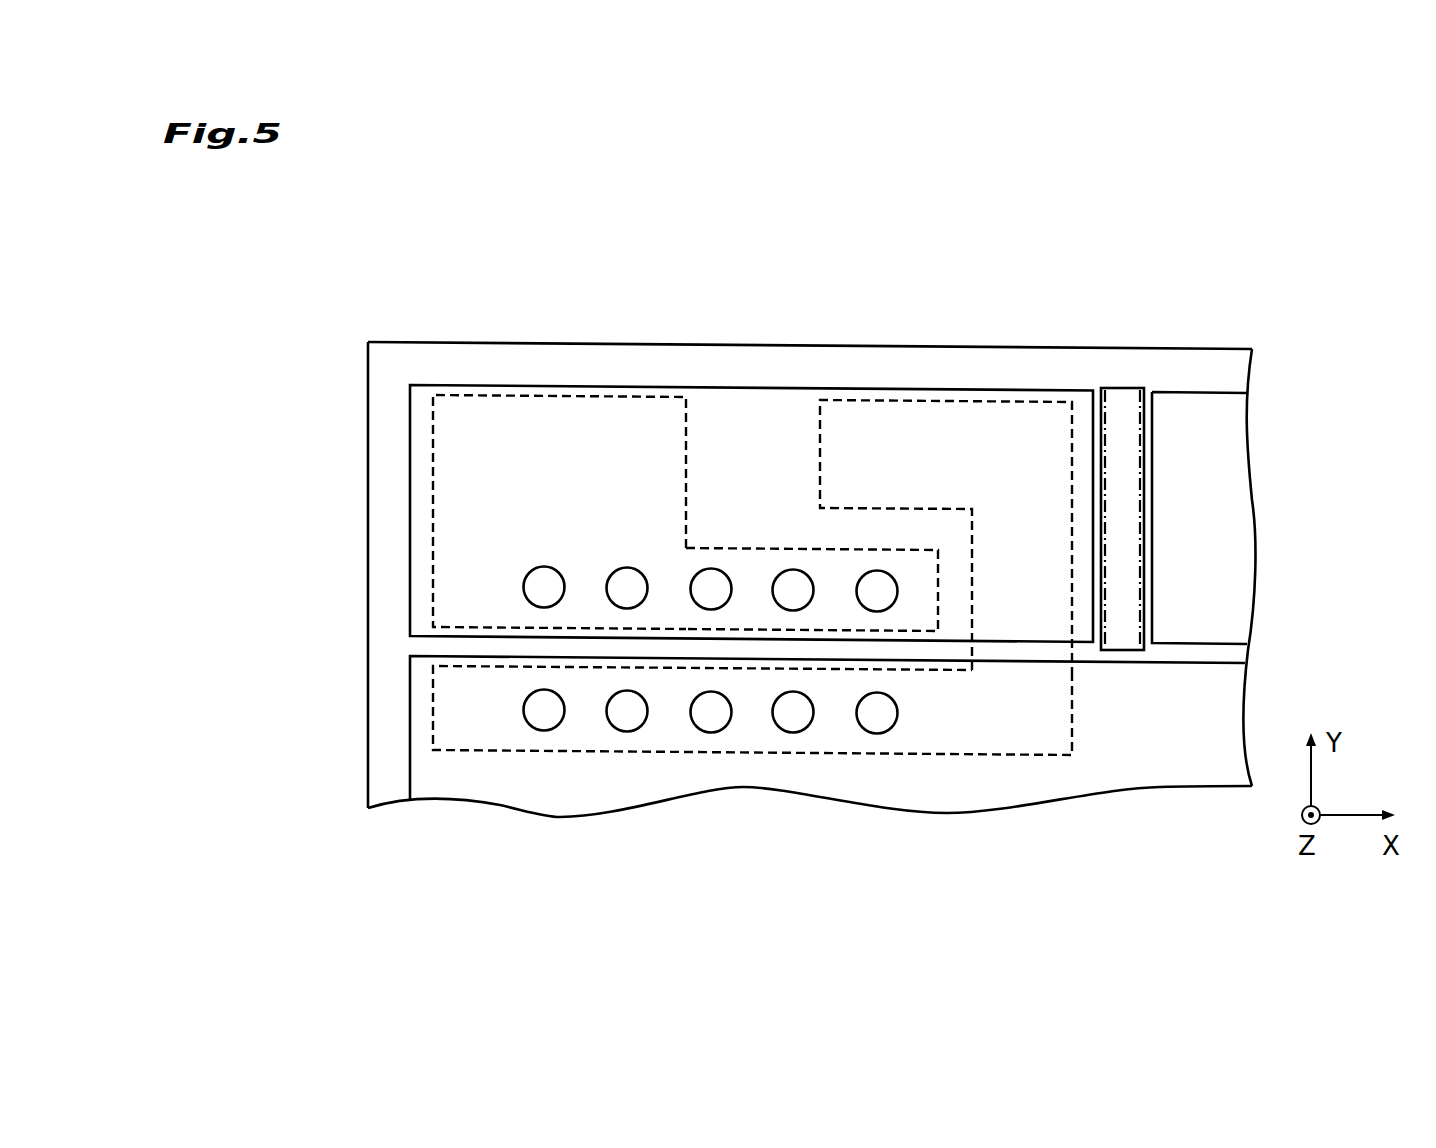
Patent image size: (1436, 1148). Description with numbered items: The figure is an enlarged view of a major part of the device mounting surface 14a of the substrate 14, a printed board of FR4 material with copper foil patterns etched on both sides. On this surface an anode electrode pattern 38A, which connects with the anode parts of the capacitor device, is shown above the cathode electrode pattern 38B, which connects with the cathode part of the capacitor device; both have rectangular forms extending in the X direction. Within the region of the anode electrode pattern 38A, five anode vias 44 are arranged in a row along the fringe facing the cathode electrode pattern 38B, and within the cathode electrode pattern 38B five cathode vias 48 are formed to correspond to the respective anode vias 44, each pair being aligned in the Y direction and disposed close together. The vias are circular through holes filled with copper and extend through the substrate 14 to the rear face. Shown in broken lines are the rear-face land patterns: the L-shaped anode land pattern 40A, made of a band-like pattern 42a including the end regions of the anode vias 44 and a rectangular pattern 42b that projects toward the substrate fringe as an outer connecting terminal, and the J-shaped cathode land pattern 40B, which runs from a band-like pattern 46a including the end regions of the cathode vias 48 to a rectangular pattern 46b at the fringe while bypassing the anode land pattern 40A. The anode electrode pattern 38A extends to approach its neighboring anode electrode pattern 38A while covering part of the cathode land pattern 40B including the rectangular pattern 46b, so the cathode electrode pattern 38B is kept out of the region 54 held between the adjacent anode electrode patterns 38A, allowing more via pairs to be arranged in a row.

The substrate 14 is at (732, 510).
The device mounting surface 14a is at (402, 353).
The anode electrode pattern 38A is at (767, 413).
The cathode electrode pattern 38B is at (1223, 710).
The anode land pattern 40A is at (606, 454).
The cathode land pattern 40B is at (817, 567).
The band-like pattern 42a is at (708, 560).
The rectangular pattern 42b is at (560, 420).
The anode via 44 is at (558, 573).
The band-like pattern 46a is at (670, 728).
The rectangular pattern 46b is at (947, 423).
The cathode via 48 is at (563, 706).
The region 54 is at (1125, 388).